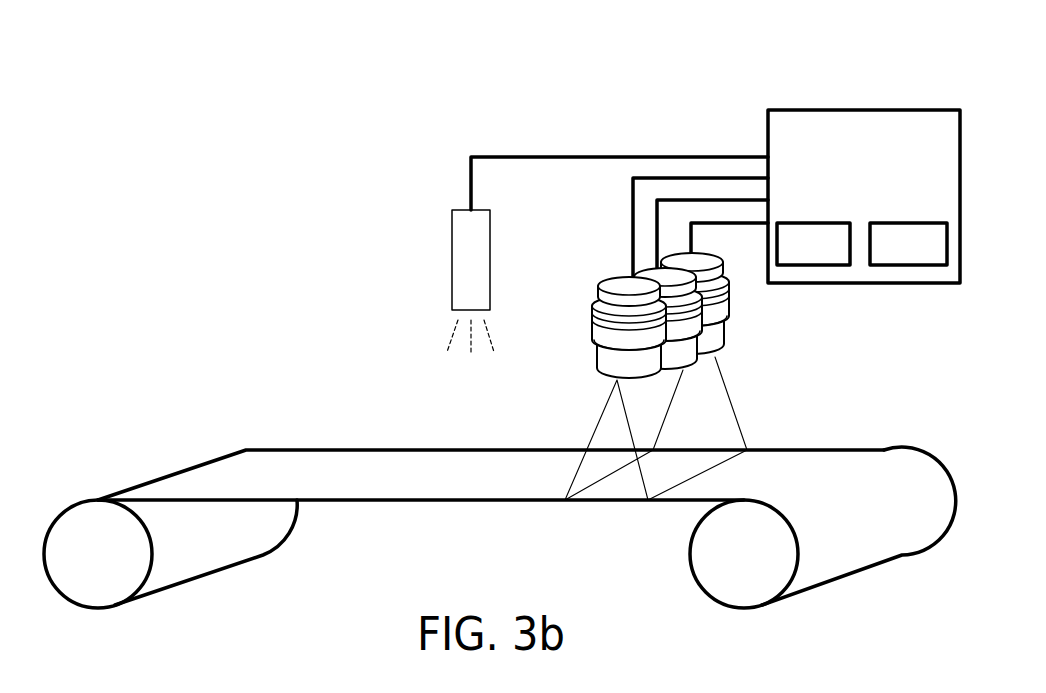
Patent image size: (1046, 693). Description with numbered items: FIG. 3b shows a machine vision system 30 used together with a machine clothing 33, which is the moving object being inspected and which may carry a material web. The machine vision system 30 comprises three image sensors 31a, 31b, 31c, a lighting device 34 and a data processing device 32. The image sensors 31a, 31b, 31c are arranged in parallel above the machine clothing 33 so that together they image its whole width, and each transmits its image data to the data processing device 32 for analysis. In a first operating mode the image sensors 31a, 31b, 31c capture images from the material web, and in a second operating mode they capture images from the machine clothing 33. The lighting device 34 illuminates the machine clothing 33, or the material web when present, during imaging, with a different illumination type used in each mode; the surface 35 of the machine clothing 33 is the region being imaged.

The machine vision system 30 is at (790, 36).
The image sensor 31a is at (597, 292).
The image sensor 31b is at (650, 275).
The image sensor 31c is at (677, 266).
The data processing device 32 is at (766, 121).
The machine clothing 33 is at (796, 472).
The lighting device 34 is at (470, 281).
The belt surface 35 is at (257, 470).